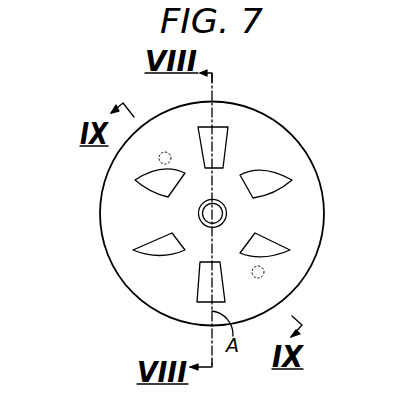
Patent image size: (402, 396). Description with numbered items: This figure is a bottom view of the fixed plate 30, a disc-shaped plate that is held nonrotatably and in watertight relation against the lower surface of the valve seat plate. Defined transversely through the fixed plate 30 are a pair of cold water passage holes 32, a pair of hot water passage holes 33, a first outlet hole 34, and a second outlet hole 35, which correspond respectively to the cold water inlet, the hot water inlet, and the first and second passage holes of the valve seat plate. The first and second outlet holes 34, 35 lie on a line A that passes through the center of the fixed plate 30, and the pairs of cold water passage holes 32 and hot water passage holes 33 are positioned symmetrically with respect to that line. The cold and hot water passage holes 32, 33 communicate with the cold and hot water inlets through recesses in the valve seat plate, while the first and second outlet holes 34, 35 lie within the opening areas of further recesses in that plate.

The fixed plate 30 is at (107, 200).
The cold water passage holes 32 is at (148, 181).
The hot water passage holes 33 is at (292, 180).
The first outlet hole 34 is at (225, 133).
The second outlet hole 35 is at (205, 283).